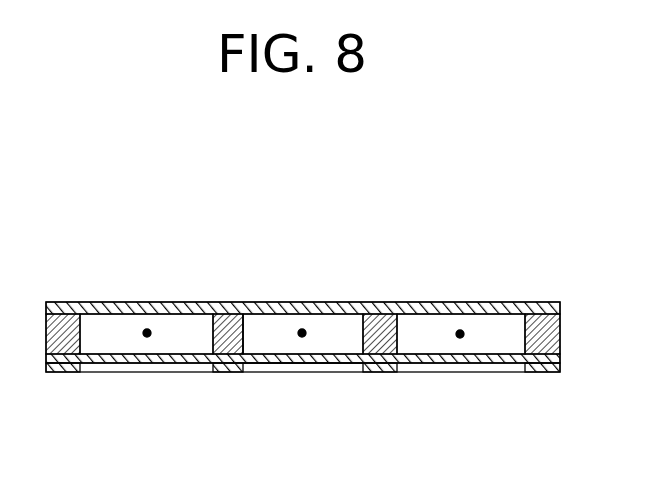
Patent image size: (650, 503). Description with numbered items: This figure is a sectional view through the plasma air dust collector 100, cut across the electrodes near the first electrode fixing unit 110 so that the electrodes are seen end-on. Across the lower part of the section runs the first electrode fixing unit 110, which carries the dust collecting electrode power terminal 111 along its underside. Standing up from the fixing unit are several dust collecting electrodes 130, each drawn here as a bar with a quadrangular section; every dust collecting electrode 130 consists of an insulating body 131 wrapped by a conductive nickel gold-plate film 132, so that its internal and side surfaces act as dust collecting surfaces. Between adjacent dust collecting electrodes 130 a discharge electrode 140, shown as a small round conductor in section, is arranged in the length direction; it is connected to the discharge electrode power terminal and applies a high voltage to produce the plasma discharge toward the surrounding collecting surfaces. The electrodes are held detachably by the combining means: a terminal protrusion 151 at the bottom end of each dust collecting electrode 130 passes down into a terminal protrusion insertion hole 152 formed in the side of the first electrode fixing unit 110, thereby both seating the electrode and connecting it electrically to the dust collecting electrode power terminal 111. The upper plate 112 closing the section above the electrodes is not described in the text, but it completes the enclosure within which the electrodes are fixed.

The plasma air dust collector 100 is at (328, 176).
The first electrode fixing unit 110 is at (531, 378).
The dust collecting electrode power terminal 111 is at (383, 373).
The top plate 112 is at (349, 303).
The dust collecting electrode 130 is at (206, 341).
The body 131 is at (222, 306).
The conductive nickel gold-plate film 132 is at (250, 333).
The discharge electrode 140 is at (147, 329).
The terminal protrusion 151 is at (226, 373).
The terminal protrusion insertion hole 152 is at (257, 369).